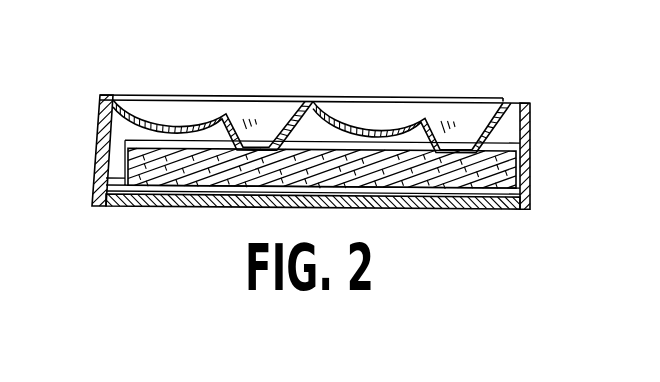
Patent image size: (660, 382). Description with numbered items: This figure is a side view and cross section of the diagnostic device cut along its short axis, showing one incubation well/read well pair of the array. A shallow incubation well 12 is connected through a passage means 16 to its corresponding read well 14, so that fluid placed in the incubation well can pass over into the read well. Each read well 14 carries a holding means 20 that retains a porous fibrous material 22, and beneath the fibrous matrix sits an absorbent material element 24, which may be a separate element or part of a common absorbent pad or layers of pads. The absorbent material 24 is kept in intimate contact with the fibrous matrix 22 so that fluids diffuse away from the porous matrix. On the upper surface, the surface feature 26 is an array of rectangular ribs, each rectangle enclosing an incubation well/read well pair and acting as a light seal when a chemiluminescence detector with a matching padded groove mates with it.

The shallow incubation well 12 is at (154, 112).
The read well 14 is at (463, 121).
The passage means 16 is at (421, 121).
The holding means 20 is at (530, 134).
The fibrous material 22 is at (521, 181).
The absorbent material element 24 is at (148, 182).
The surface feature 26 is at (304, 100).